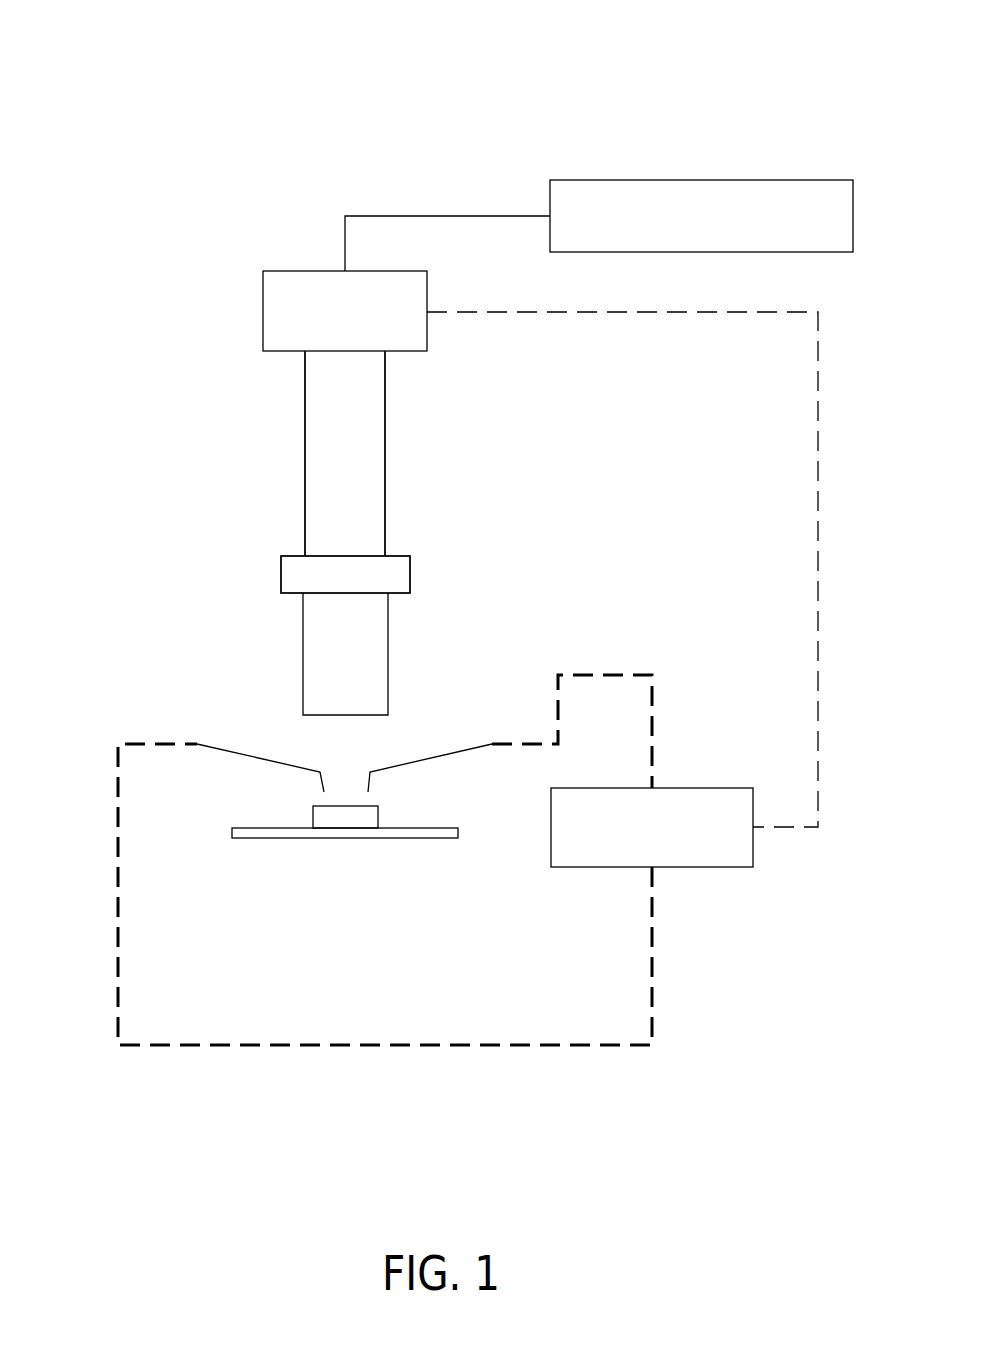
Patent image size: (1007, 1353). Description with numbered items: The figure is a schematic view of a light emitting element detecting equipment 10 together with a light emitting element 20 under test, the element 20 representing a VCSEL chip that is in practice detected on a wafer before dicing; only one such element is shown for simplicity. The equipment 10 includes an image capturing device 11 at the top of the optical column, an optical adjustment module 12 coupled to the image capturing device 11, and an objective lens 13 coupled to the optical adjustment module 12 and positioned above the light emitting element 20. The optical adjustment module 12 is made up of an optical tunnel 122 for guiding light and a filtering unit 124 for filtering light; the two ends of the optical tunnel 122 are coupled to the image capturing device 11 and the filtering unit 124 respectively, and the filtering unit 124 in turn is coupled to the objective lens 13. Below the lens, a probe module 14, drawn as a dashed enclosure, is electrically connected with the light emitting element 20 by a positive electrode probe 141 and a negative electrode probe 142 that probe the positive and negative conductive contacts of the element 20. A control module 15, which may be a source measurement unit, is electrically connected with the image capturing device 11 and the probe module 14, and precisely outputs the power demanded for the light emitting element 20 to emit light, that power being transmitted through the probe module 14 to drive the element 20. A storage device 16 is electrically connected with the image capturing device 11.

The light emitting element detecting equipment 10 is at (658, 100).
The image capturing device 11 is at (263, 305).
The optical adjustment module 12 is at (137, 423).
The optical tunnel 122 is at (305, 455).
The filtering unit 124 is at (281, 573).
The objective lens 13 is at (303, 663).
The probe module 14 is at (205, 720).
The positive electrode probe 141 is at (257, 760).
The negative electrode probe 142 is at (460, 753).
The control module 15 is at (713, 867).
The storage device 16 is at (747, 180).
The light emitting element 20 is at (347, 817).